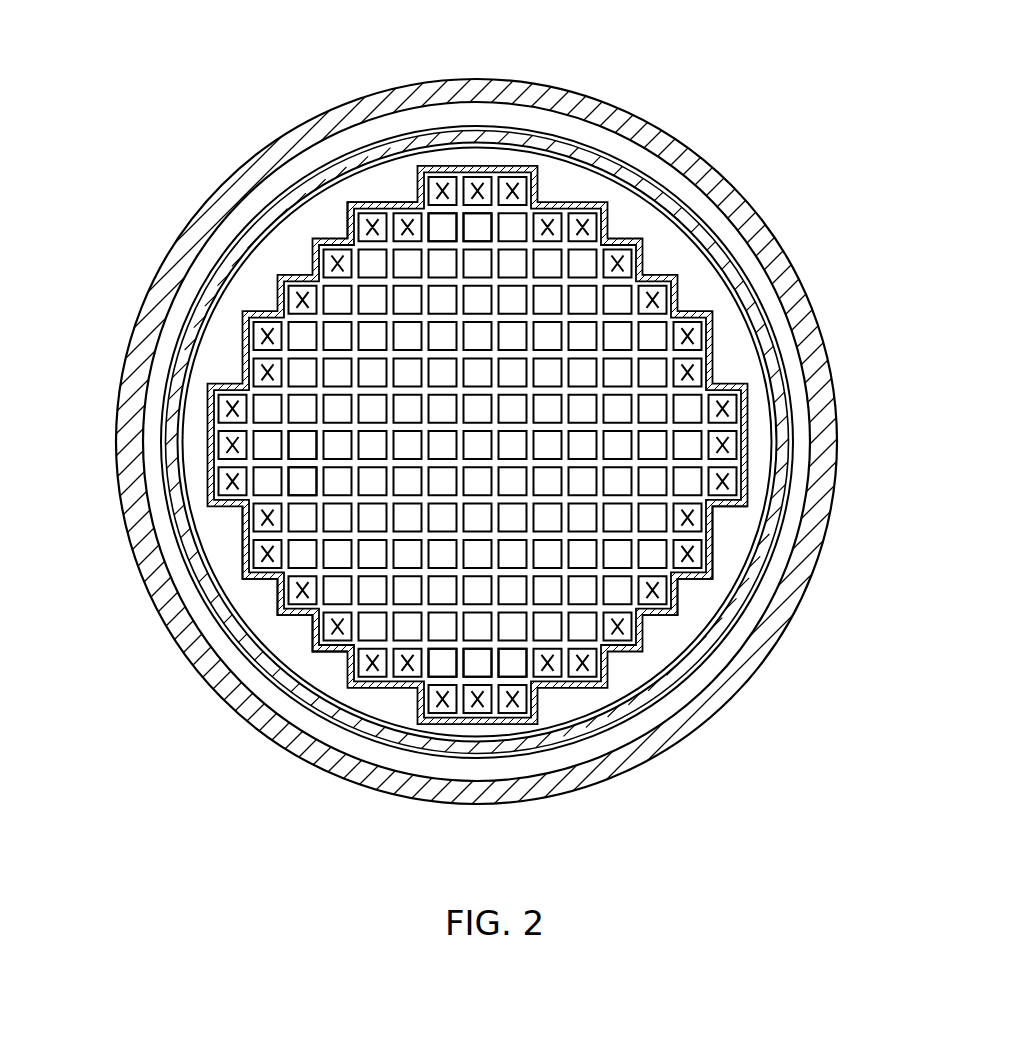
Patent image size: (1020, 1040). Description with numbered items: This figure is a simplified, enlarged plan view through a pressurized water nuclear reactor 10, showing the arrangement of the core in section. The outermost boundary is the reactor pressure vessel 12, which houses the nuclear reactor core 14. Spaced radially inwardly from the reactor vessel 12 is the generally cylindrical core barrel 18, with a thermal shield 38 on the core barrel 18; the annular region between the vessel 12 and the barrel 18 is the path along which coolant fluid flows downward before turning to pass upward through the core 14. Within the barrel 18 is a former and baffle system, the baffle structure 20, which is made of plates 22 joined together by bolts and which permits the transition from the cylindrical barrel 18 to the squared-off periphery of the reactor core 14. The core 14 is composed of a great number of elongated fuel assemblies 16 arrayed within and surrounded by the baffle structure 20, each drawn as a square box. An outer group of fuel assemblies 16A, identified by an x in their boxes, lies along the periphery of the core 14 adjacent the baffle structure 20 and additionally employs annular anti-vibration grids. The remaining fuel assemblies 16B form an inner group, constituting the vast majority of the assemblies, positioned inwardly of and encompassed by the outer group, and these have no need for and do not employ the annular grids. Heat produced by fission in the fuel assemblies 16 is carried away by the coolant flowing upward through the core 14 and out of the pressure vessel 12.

The pressurized water nuclear reactor 10 is at (645, 108).
The reactor pressure vessel 12 is at (735, 188).
The nuclear reactor core 14 is at (630, 220).
The thermal shield 38 is at (412, 178).
The core barrel 18 is at (453, 143).
The baffle structure 20 is at (323, 232).
The plates 22 is at (343, 227).
The fuel assemblies 16 is at (535, 221).
The outer group fuel assemblies 16A is at (258, 373).
The inner group fuel assemblies 16B is at (485, 220).